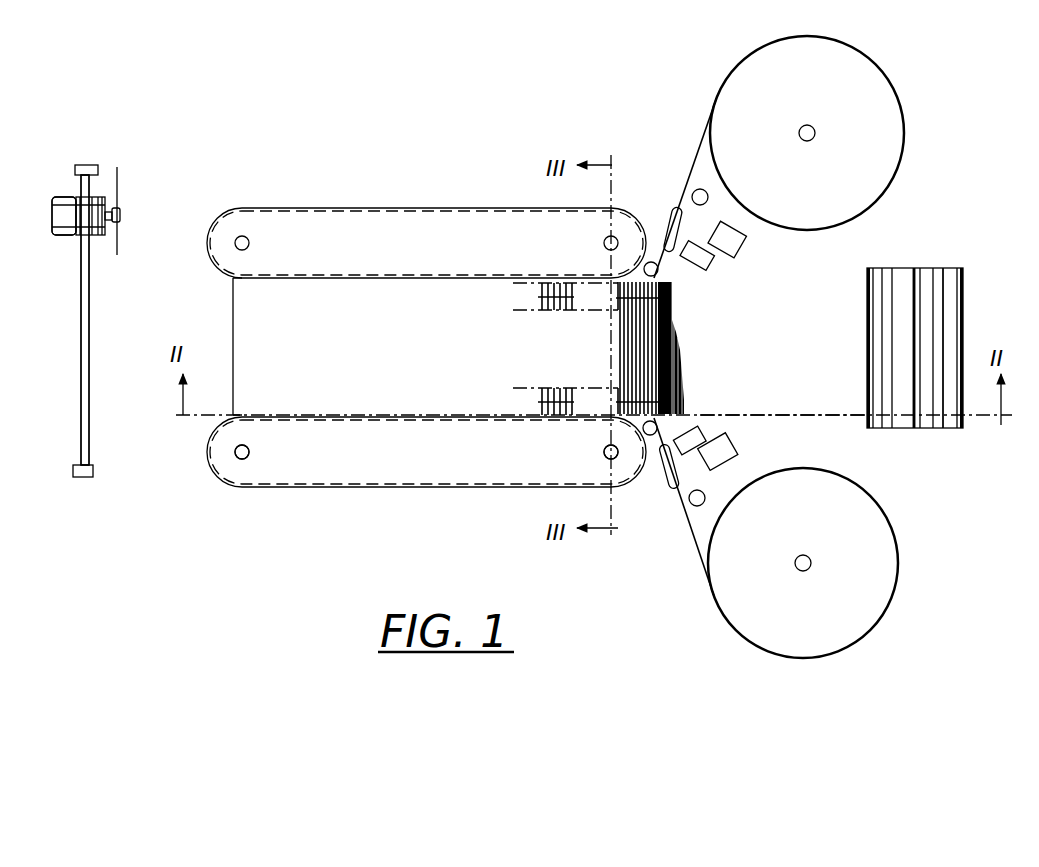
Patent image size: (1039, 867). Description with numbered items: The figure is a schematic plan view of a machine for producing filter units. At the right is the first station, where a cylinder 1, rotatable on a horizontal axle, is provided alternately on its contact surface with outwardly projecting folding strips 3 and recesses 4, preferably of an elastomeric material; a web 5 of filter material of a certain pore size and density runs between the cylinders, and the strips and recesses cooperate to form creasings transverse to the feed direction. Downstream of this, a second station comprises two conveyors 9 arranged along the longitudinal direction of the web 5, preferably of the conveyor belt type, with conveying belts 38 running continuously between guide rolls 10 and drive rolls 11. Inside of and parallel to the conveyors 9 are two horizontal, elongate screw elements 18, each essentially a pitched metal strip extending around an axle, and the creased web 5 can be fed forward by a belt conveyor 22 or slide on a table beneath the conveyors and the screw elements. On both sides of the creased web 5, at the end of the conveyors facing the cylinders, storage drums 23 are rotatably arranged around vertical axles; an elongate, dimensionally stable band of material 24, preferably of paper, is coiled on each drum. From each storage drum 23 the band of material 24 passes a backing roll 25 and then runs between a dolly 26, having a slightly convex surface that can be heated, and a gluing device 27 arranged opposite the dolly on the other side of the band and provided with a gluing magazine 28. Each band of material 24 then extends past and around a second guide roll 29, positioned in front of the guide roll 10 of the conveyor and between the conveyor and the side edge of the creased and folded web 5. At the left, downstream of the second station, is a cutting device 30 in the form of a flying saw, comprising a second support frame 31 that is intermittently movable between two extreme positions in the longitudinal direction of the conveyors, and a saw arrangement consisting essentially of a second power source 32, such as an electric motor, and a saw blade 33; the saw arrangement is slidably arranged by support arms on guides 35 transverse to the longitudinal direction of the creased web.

The cylinder 1 is at (951, 437).
The folding strips 3 is at (920, 270).
The recesses 4 is at (945, 283).
The web 5 is at (820, 416).
The conveyors 9 is at (372, 208).
The guide rolls 10 is at (583, 467).
The drive rolls 11 is at (246, 485).
The screw elements 18 is at (530, 400).
The belt conveyor 22 is at (231, 305).
The storage drums 23 is at (717, 100).
The band of material 24 is at (700, 556).
The backing roll 25 is at (702, 494).
The dolly 26 is at (670, 232).
The gluing device 27 is at (738, 250).
The gluing magazine 28 is at (707, 268).
The second guide roll 29 is at (656, 436).
The cutting device 30 is at (58, 246).
The second support frame 31 is at (93, 470).
The second power source 32 is at (63, 205).
The saw blade 33 is at (118, 195).
The guides 35 is at (78, 443).
The conveying belts 38 is at (300, 210).